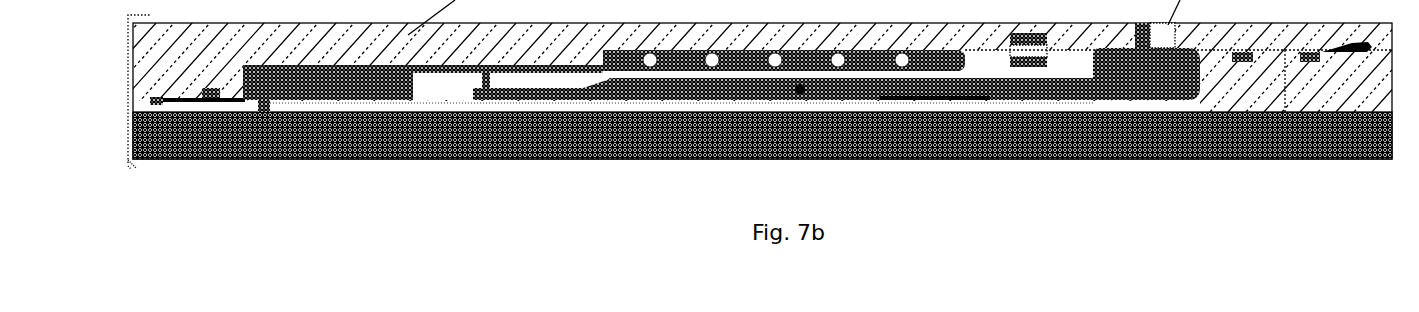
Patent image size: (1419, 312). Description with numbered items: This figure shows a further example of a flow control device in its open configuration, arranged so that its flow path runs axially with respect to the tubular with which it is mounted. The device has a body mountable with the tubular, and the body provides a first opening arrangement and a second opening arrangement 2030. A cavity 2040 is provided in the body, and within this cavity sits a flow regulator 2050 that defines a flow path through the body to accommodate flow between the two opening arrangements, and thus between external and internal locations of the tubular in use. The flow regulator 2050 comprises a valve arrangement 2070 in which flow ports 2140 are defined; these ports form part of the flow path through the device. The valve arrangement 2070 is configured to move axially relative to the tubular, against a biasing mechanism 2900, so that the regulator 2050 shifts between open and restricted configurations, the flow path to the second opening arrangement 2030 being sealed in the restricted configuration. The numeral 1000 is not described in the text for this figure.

The semiconductor die 1000 is at (700, 90).
The second opening arrangement 2030 is at (277, 110).
The flow ports 2140 is at (486, 75).
The valve arrangement 2070 is at (575, 98).
The biasing mechanism 2900 is at (798, 88).
The cavity 2040 is at (903, 97).
The flow regulator 2050 is at (938, 97).